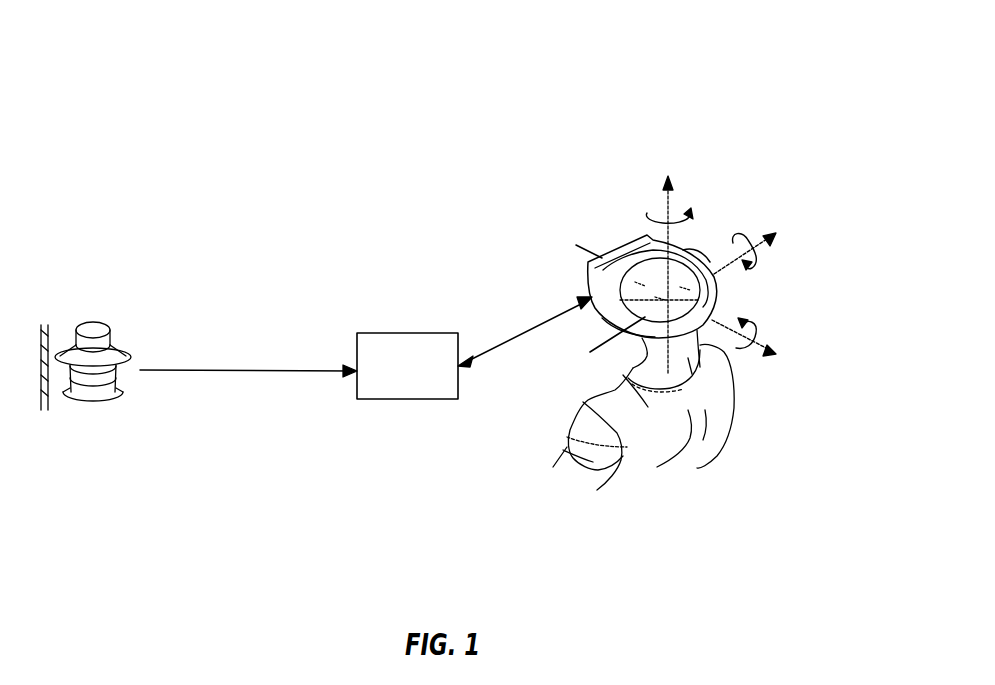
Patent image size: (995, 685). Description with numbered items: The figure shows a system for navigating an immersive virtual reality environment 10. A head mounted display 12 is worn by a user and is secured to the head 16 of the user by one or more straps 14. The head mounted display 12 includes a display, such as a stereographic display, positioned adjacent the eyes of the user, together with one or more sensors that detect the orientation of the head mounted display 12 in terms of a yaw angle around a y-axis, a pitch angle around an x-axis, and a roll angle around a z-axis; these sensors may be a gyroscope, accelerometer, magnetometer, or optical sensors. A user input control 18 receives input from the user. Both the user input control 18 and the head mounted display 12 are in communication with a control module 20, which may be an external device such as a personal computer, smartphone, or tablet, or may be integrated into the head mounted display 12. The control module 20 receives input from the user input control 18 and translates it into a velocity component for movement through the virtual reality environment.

The system for navigating an immersive virtual reality environment 10 is at (793, 153).
The head mounted display 12 is at (608, 252).
The straps 14 is at (722, 300).
The head 16 is at (693, 255).
The user input control 18 is at (96, 322).
The control module 20 is at (422, 376).